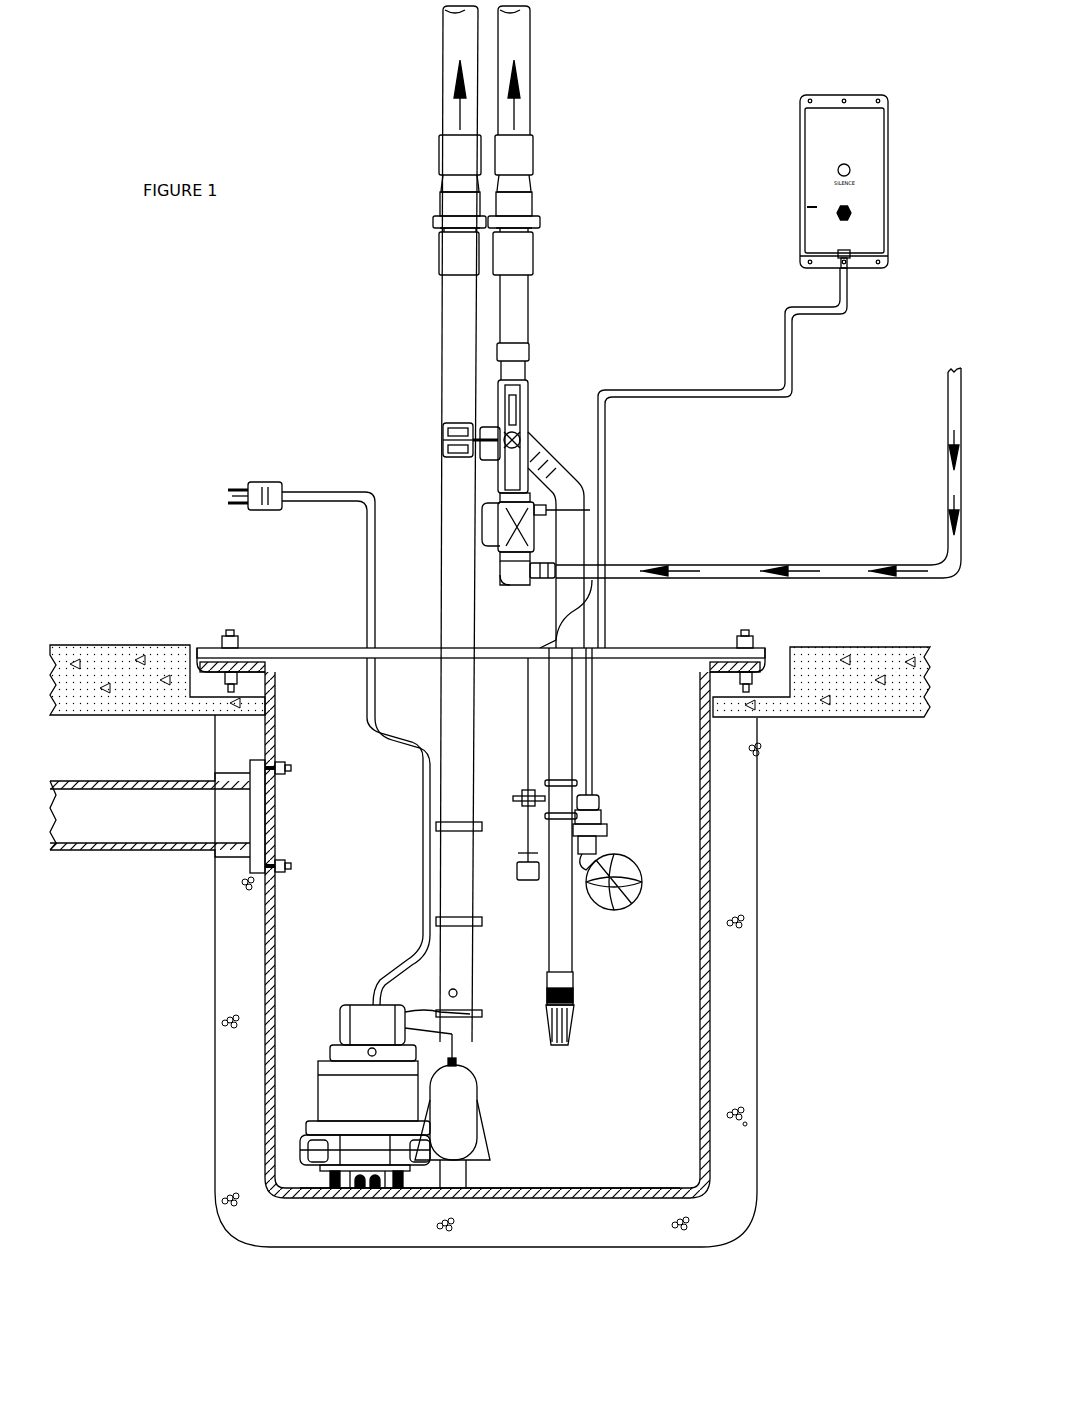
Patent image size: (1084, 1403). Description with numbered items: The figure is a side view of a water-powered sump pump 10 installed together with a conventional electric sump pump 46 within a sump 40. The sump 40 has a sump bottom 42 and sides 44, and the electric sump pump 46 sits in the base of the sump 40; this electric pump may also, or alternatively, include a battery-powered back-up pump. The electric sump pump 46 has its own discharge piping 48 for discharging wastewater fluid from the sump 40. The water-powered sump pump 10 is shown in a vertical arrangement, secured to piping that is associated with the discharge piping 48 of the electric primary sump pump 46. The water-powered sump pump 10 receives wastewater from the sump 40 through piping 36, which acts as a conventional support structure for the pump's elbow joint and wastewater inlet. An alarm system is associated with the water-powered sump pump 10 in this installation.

The water-powered sump pump 10 is at (550, 403).
The piping 36 is at (557, 748).
The sump 40 is at (612, 1110).
The sump bottom 42 is at (541, 1192).
The sides 44 is at (703, 1037).
The conventional electric sump pump 46 is at (340, 1100).
The discharge piping 48 is at (453, 355).